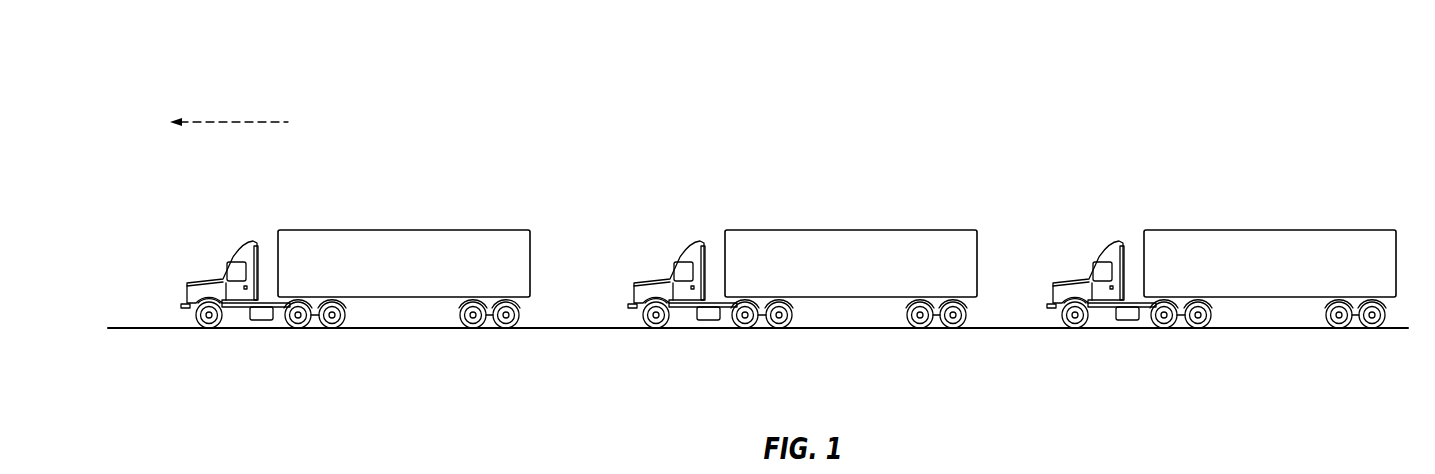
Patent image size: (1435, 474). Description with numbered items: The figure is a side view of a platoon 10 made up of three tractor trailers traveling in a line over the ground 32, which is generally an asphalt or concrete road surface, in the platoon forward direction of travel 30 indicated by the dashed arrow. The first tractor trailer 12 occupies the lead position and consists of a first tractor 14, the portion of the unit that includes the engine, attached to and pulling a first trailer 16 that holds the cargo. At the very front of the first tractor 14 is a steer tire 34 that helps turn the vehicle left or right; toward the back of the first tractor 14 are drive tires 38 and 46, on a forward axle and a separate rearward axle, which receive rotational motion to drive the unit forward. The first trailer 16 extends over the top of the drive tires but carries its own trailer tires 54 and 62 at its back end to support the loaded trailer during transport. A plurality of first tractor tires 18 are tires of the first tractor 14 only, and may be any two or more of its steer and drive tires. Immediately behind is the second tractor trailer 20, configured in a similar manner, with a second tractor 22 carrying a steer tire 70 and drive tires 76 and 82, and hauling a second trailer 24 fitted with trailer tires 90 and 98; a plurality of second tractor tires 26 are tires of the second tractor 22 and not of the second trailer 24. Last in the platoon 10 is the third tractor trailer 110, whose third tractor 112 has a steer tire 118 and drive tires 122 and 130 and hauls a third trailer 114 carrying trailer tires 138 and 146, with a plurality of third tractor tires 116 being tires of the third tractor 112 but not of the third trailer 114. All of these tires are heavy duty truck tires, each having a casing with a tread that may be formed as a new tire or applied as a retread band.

The platoon 10 is at (1179, 58).
The first tractor trailer 12 is at (425, 182).
The first tractor 14 is at (240, 245).
The first trailer 16 is at (487, 237).
The plurality of first tractor tires 18 is at (193, 340).
The second tractor trailer 20 is at (833, 182).
The second tractor 22 is at (682, 251).
The second trailer 24 is at (858, 248).
The plurality of second tractor tires 26 is at (657, 340).
The platoon forward direction of travel 30 is at (262, 122).
The ground 32 is at (167, 328).
The steer tire 34 is at (210, 325).
The drive tire 38 is at (298, 327).
The drive tire 46 is at (333, 327).
The trailer tire 54 is at (473, 327).
The trailer tire 62 is at (506, 327).
The steer tire 70 is at (657, 340).
The drive tire 76 is at (734, 339).
The drive tire 82 is at (790, 339).
The trailer tire 90 is at (909, 339).
The trailer tire 98 is at (965, 339).
The third tractor trailer 110 is at (1281, 182).
The third tractor 112 is at (1101, 251).
The third trailer 114 is at (1271, 248).
The plurality of third tractor tires 116 is at (1067, 340).
The steer tire 118 is at (1067, 340).
The drive tire 122 is at (1155, 339).
The drive tire 130 is at (1212, 339).
The trailer tire 138 is at (1324, 339).
The trailer tire 146 is at (1387, 339).